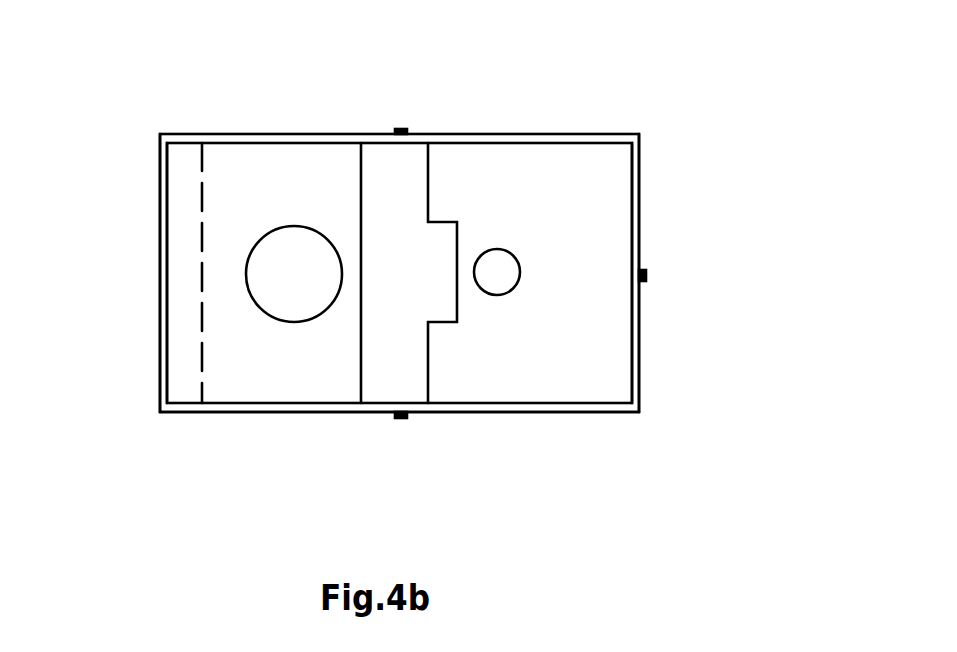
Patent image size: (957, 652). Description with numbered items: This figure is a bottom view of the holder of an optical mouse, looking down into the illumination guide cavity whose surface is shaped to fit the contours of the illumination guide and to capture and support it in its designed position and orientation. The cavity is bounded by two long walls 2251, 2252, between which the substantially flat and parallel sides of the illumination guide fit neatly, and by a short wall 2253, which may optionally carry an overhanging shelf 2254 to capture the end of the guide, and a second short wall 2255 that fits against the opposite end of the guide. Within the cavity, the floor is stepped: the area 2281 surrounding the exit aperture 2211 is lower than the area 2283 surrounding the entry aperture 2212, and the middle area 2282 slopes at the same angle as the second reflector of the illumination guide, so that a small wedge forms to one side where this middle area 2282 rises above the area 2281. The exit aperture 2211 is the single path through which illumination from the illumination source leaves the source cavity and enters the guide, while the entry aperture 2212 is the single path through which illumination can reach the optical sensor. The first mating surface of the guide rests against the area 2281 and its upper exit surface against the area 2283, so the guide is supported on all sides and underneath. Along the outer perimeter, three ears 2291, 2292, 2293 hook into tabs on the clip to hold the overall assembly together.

The long wall 2251 is at (227, 138).
The long wall 2252 is at (207, 412).
The short wall 2253 is at (163, 278).
The overhanging shelf 2254 is at (185, 332).
The second short wall 2255 is at (639, 343).
The area surrounding the exit aperture 2281 is at (232, 322).
The middle area 2282 is at (408, 163).
The area surrounding the entry aperture 2283 is at (532, 200).
The exit aperture 2211 is at (280, 255).
The entry aperture 2212 is at (503, 280).
The ear 2291 is at (400, 420).
The ear 2292 is at (646, 276).
The ear 2293 is at (400, 129).